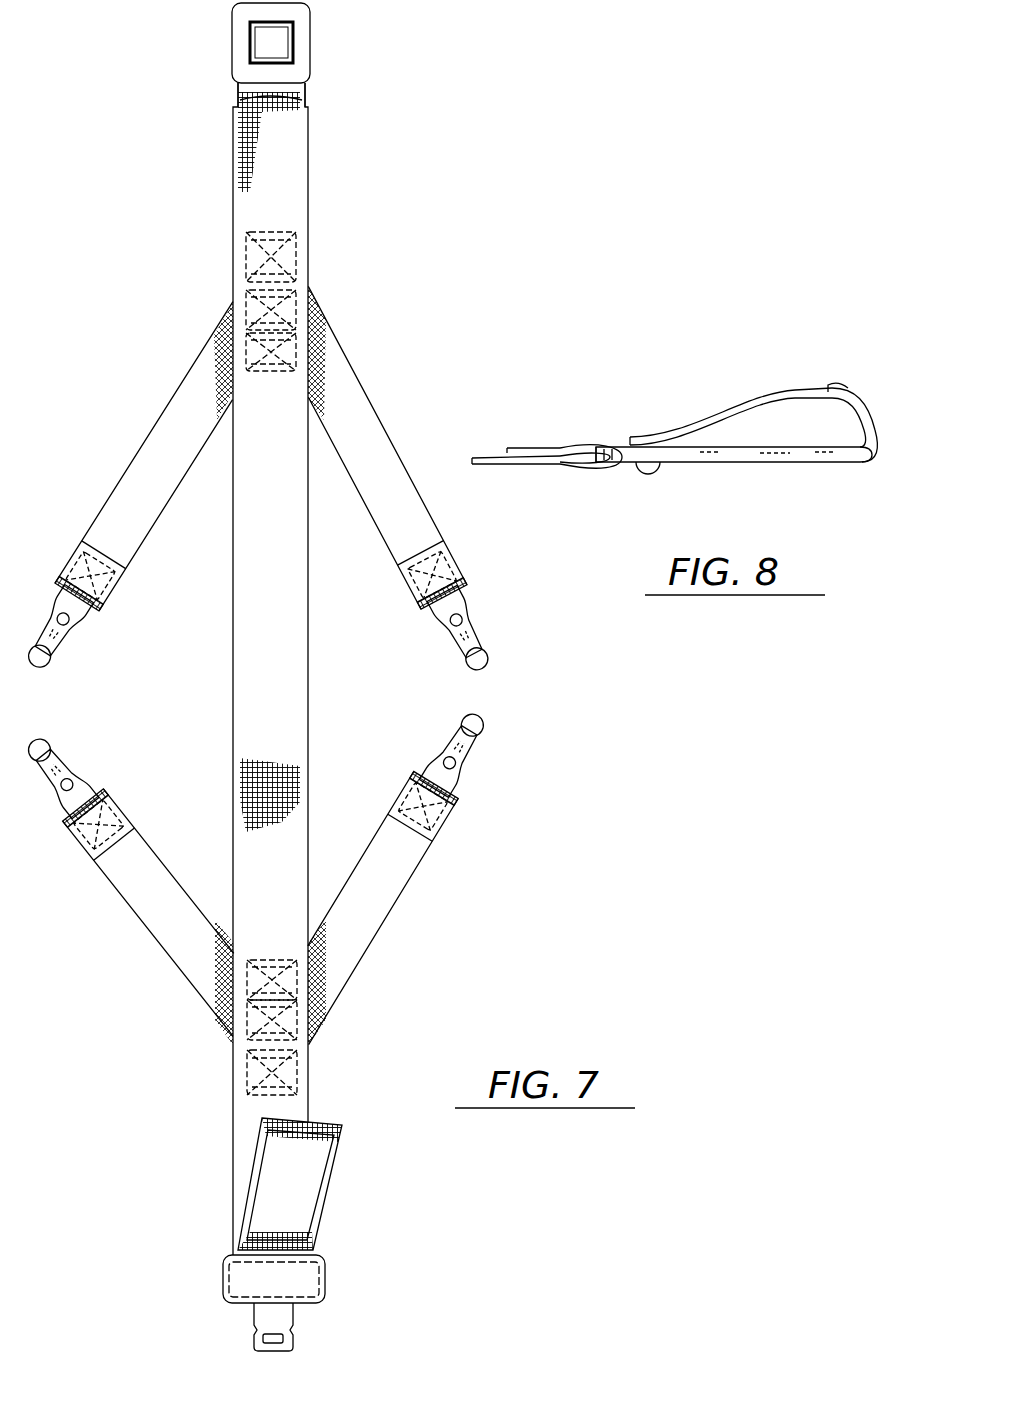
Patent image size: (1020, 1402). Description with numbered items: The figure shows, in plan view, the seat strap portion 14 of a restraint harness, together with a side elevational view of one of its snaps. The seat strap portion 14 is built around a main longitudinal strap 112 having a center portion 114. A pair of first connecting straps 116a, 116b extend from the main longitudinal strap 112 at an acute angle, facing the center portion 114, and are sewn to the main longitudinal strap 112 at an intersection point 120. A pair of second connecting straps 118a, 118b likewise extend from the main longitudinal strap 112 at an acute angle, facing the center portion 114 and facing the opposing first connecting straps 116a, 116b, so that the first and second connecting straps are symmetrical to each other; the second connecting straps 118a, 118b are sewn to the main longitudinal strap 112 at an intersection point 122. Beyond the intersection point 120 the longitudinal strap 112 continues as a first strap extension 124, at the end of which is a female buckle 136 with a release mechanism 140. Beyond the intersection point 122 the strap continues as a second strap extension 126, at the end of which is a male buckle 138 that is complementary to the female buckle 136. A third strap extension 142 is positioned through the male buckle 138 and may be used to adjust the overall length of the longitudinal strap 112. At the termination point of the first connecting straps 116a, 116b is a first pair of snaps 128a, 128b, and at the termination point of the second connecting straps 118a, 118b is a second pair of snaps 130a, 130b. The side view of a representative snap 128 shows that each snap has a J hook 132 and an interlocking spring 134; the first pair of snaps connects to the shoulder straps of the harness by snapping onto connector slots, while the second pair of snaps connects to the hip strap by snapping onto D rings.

In FIG. 7, the seat strap portion 14 is at (448, 192).
In FIG. 7, the main longitudinal strap 112 is at (310, 148).
In FIG. 7, the center portion 114 is at (312, 688).
In FIG. 7, the first connecting strap 116a is at (395, 433).
In FIG. 7, the first connecting strap 116b is at (155, 427).
In FIG. 7, the second connecting strap 118a is at (400, 895).
In FIG. 7, the second connecting strap 118b is at (135, 918).
In FIG. 7, the intersection point 120 is at (290, 310).
In FIG. 7, the intersection point 122 is at (292, 1015).
In FIG. 7, the first strap extension 124 is at (233, 193).
In FIG. 7, the second strap extension 126 is at (233, 1142).
In FIG. 8, the snap 128 is at (788, 462).
In FIG. 7, the snap 128a is at (485, 617).
In FIG. 7, the snap 128b is at (60, 650).
In FIG. 7, the snap 130a is at (490, 752).
In FIG. 7, the snap 130b is at (65, 762).
In FIG. 8, the J hook 132 is at (855, 395).
In FIG. 8, the interlocking spring 134 is at (748, 395).
In FIG. 7, the female buckle 136 is at (305, 15).
In FIG. 7, the male buckle 138 is at (325, 1293).
In FIG. 7, the release mechanism 140 is at (295, 45).
In FIG. 7, the third strap extension 142 is at (345, 1130).